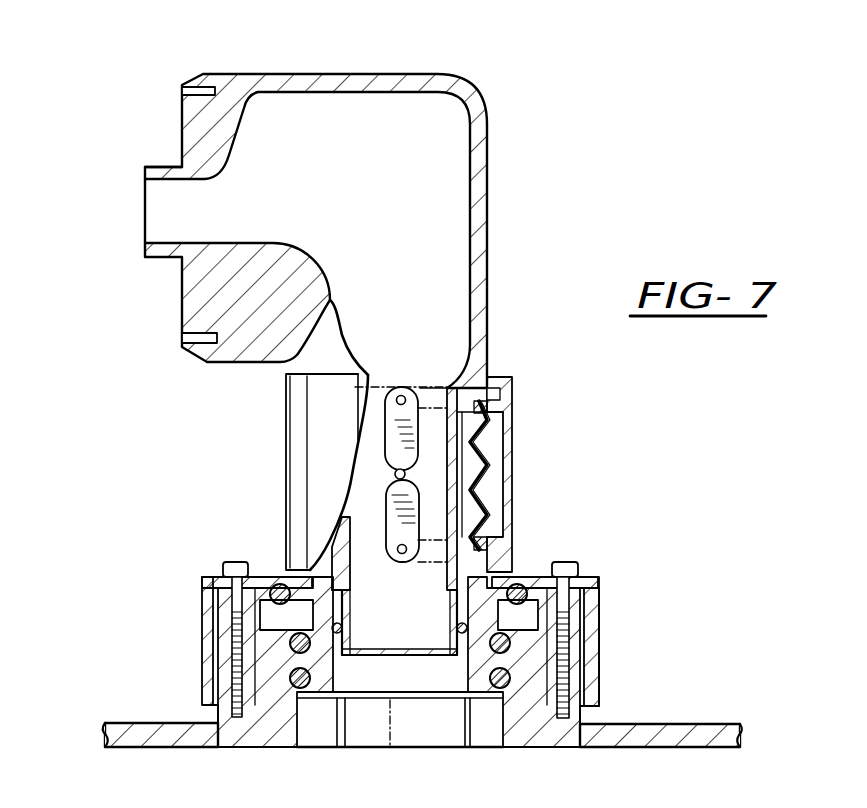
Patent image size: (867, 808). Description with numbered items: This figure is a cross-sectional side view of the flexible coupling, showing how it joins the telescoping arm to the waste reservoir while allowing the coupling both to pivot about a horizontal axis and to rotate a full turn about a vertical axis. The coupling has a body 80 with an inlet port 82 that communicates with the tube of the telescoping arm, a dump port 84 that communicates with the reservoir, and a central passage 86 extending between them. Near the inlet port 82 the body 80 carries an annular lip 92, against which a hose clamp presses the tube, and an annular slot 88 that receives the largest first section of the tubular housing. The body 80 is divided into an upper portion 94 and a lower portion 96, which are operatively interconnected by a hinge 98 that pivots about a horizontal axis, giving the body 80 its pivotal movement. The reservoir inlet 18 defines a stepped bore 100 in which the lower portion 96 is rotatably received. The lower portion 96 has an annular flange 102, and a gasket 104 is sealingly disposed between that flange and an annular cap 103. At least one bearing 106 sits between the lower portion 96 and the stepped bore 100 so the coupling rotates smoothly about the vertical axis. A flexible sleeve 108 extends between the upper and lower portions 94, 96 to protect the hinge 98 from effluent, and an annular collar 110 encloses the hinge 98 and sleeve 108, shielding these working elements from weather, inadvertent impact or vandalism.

The inlet 18 is at (345, 725).
The body 80 is at (487, 183).
The inlet port 82 is at (150, 200).
The dump port 84 is at (420, 640).
The central passage 86 is at (432, 308).
The annular slot 88 is at (182, 90).
The annular lip 92 is at (148, 168).
The upper portion 94 is at (478, 362).
The lower portion 96 is at (322, 558).
The hinge 98 is at (388, 469).
The stepped bore 100 is at (292, 697).
The annular flange 102 is at (540, 627).
The annular cap 103 is at (214, 572).
The gasket 104 is at (527, 587).
The bearing 106 is at (292, 648).
The flexible sleeve 108 is at (487, 462).
The annular collar 110 is at (297, 399).